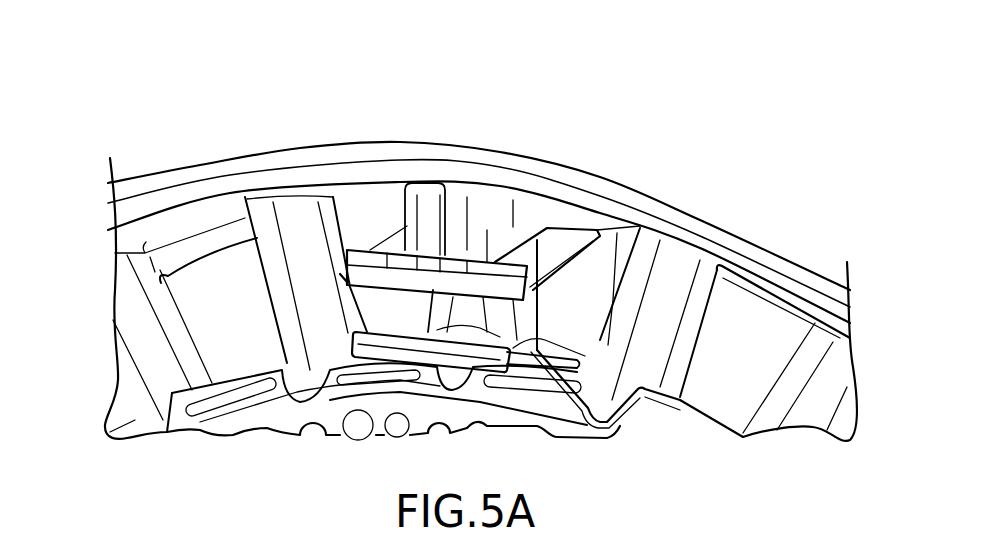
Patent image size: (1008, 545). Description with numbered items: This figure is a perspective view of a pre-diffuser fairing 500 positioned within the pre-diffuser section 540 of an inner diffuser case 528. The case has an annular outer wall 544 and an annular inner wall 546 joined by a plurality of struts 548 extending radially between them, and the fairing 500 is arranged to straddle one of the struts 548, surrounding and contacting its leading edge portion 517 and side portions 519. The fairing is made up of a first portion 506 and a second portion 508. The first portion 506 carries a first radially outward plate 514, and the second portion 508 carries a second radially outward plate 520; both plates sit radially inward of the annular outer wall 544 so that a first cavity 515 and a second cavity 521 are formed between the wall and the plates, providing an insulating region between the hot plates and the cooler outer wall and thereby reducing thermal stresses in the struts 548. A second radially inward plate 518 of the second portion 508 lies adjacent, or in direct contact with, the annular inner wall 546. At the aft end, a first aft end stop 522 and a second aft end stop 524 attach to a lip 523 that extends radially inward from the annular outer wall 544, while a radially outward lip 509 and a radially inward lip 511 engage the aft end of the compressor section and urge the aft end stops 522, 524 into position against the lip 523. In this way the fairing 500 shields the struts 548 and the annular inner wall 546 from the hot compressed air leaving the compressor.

The pre-diffuser fairing 500 is at (367, 210).
The first portion 506 is at (347, 228).
The second portion 508 is at (581, 281).
The radially outward lip 509 is at (342, 277).
The radially inward lip 511 is at (350, 343).
The first radially outward plate 514 is at (405, 238).
The first cavity 515 is at (455, 200).
The leading edge portion 517 is at (468, 210).
The second radially inward plate 518 is at (548, 358).
The side portions 519 is at (502, 222).
The second radially outward plate 520 is at (567, 217).
The second cavity 521 is at (478, 213).
The first aft end stop 522 is at (430, 207).
The lip 523 is at (220, 240).
The second aft end stop 524 is at (587, 215).
The inner diffuser case 528 is at (174, 148).
The pre-diffuser section 540 is at (179, 303).
The annular outer wall 544 is at (760, 253).
The annular inner wall 546 is at (689, 412).
The struts 548 is at (528, 205).